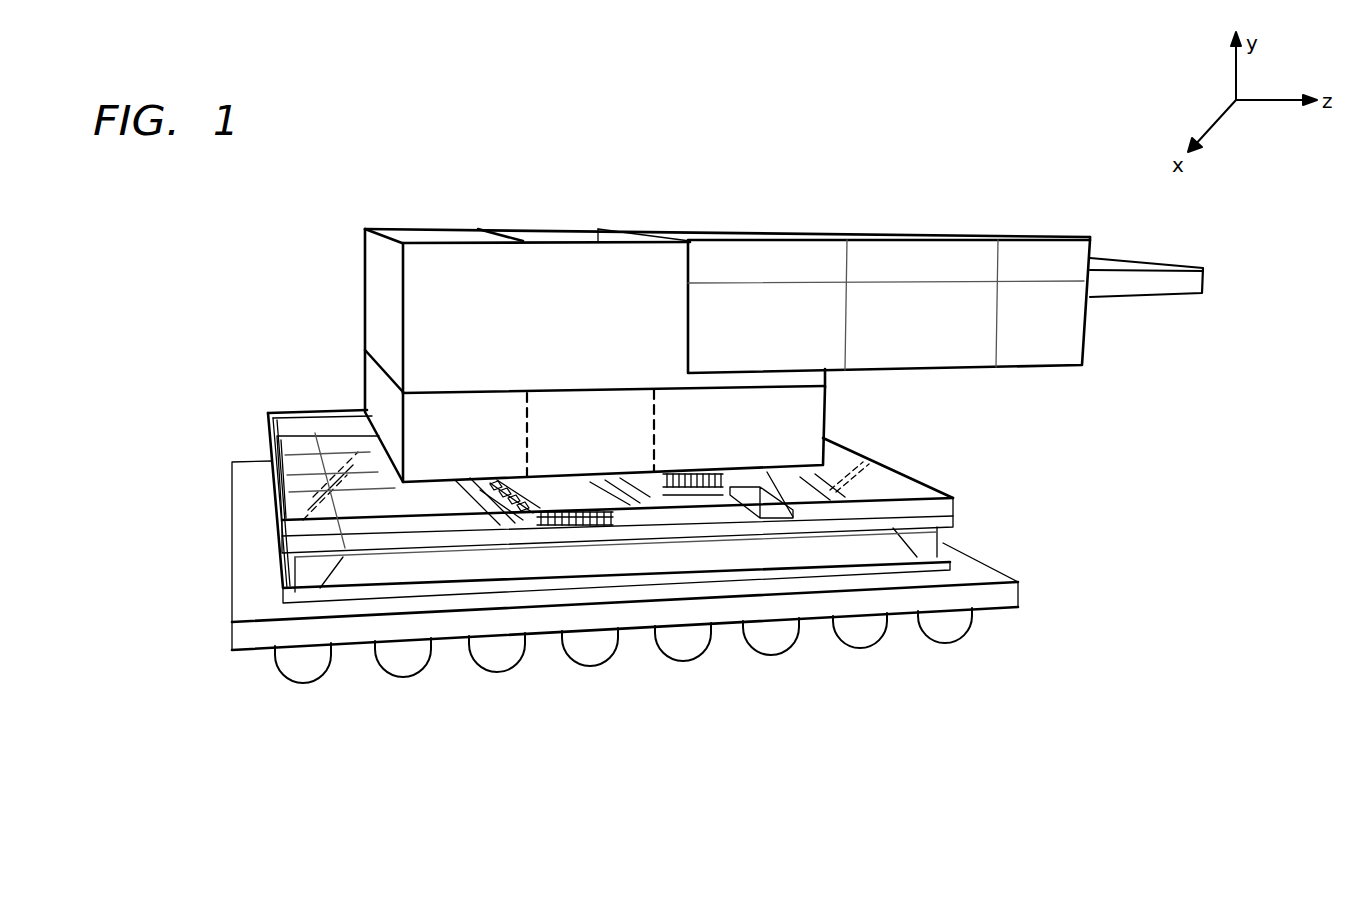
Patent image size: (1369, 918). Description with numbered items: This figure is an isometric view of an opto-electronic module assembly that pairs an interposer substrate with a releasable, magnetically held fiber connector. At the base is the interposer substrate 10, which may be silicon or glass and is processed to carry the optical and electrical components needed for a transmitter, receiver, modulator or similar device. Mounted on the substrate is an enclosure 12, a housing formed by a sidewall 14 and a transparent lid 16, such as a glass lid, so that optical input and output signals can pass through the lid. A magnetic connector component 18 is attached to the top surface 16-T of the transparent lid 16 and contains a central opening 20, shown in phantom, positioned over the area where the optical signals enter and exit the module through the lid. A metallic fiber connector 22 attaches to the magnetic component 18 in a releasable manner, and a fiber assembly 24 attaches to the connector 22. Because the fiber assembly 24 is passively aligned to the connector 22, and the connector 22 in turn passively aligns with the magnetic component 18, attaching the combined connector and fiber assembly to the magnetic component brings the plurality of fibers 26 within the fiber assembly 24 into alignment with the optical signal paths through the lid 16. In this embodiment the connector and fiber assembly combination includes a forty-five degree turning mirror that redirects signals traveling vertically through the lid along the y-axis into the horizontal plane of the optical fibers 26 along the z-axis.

The interposer substrate 10 is at (953, 563).
The enclosure 12 is at (270, 498).
The sidewall 14 is at (303, 570).
The transparent lid 16 is at (948, 512).
The top surface of transparent lid 16-T is at (840, 458).
The magnetic connector component 18 is at (388, 410).
The central opening 20 is at (582, 462).
The metallic fiber connector 22 is at (414, 233).
The fiber assembly 24 is at (721, 238).
The optical fibers 26 is at (1112, 263).